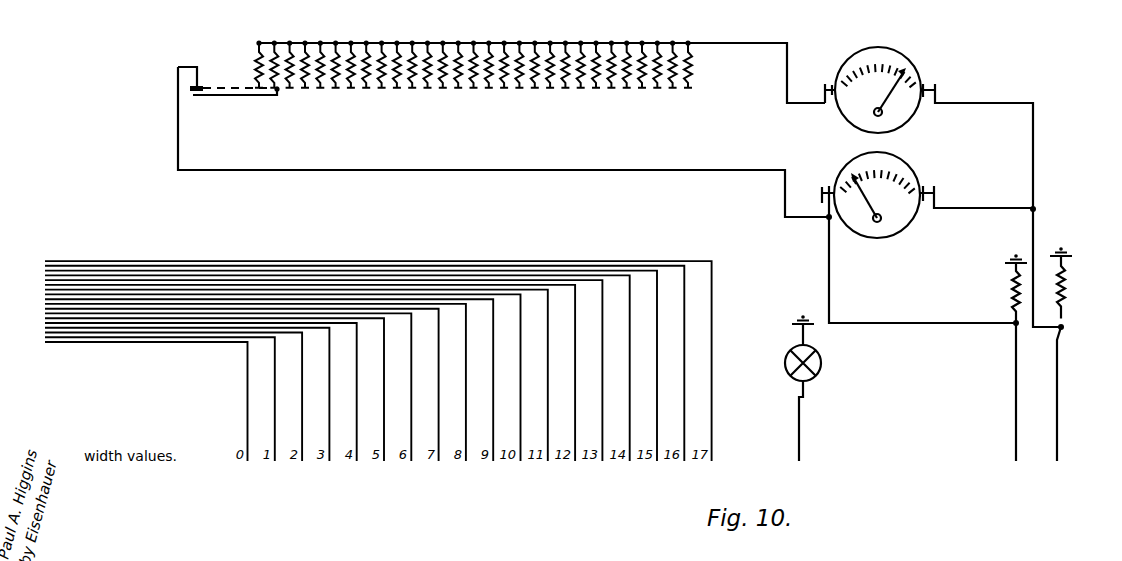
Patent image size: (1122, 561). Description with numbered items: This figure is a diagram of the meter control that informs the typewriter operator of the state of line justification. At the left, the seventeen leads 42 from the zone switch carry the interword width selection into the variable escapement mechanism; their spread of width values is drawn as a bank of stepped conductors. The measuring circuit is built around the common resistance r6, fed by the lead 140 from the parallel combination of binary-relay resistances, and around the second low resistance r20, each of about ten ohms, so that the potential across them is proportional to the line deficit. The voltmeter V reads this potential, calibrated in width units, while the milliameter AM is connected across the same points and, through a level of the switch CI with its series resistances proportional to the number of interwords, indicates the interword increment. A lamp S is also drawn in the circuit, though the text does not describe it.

The leads 42 is at (163, 259).
The lead 140 is at (1057, 416).
The switch CI is at (473, 53).
The milliameter AM is at (900, 90).
The voltmeter V is at (888, 195).
The signal lamp S is at (812, 388).
The second low resistance r20 is at (1003, 357).
The common resistance r6 is at (1071, 288).